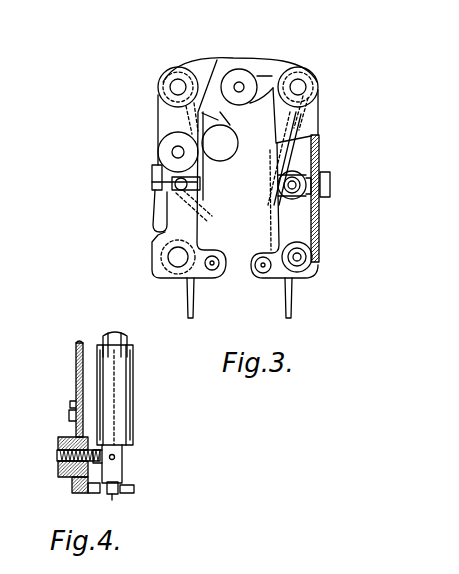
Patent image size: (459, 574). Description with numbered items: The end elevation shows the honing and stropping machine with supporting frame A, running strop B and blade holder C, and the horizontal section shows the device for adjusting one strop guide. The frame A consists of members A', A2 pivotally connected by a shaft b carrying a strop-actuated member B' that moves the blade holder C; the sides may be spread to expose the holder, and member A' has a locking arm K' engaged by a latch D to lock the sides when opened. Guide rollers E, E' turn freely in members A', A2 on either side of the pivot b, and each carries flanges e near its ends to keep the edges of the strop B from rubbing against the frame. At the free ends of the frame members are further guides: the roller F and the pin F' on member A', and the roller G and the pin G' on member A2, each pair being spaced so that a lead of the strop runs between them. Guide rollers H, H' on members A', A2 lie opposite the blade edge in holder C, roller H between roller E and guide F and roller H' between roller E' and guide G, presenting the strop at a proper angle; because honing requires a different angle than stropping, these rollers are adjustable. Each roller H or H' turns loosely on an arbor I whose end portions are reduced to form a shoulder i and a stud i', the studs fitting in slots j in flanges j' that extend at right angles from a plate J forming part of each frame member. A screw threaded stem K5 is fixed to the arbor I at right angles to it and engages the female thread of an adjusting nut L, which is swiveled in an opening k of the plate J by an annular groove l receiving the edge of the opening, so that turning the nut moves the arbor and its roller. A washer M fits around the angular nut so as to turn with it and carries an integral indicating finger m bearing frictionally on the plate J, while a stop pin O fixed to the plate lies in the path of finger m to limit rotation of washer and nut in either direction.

In FIG. 3, the supporting frame A is at (235, 153).
In FIG. 3, the frame member A' is at (311, 150).
In FIG. 4, the frame member A' is at (58, 343).
In FIG. 3, the frame member A2 is at (158, 235).
In FIG. 3, the strop B is at (240, 298).
In FIG. 3, the strop-actuated member B' is at (231, 67).
In FIG. 3, the shaft b is at (240, 84).
In FIG. 3, the blade holder C is at (233, 137).
In FIG. 3, the latch D is at (152, 177).
In FIG. 3, the guide roller E is at (313, 74).
In FIG. 3, the guide roller E' is at (155, 87).
In FIG. 3, the flanges e is at (170, 72).
In FIG. 3, the guide F is at (313, 263).
In FIG. 3, the guide F' is at (258, 280).
In FIG. 3, the guide G is at (160, 264).
In FIG. 3, the guide G' is at (213, 284).
In FIG. 3, the guide roller H is at (317, 199).
In FIG. 4, the guide roller H is at (132, 414).
In FIG. 3, the guide roller H' is at (203, 176).
In FIG. 3, the arbor I is at (176, 186).
In FIG. 4, the arbor I is at (127, 345).
In FIG. 3, the plate J is at (196, 194).
In FIG. 4, the plate J is at (76, 372).
In FIG. 3, the locking arm K' is at (158, 135).
In FIG. 3, the screw threaded stem K5 is at (321, 155).
In FIG. 4, the screw threaded stem K5 is at (58, 466).
In FIG. 3, the adjusting nut L is at (330, 178).
In FIG. 4, the adjusting nut L is at (72, 485).
In FIG. 3, the washer M is at (305, 193).
In FIG. 4, the stop member O is at (69, 417).
In FIG. 4, the indicating member m is at (70, 404).
In FIG. 4, the opening k is at (58, 443).
In FIG. 4, the groove l is at (115, 458).
In FIG. 4, the shoulder i is at (131, 479).
In FIG. 4, the stud i' is at (119, 505).
In FIG. 4, the slot j is at (146, 494).
In FIG. 4, the flange j' is at (75, 499).